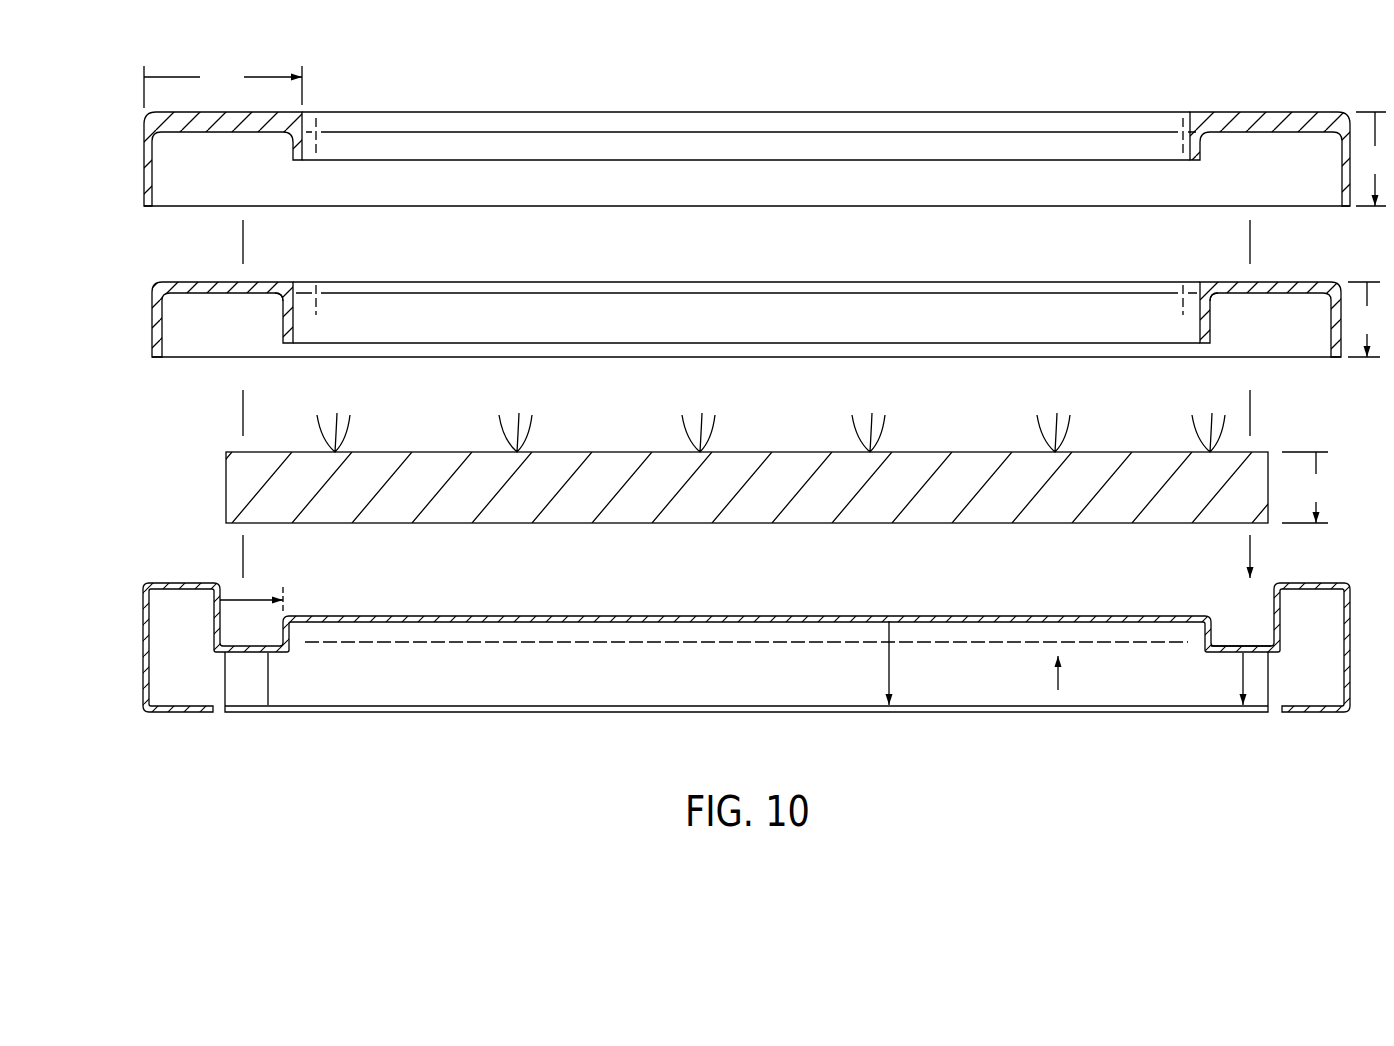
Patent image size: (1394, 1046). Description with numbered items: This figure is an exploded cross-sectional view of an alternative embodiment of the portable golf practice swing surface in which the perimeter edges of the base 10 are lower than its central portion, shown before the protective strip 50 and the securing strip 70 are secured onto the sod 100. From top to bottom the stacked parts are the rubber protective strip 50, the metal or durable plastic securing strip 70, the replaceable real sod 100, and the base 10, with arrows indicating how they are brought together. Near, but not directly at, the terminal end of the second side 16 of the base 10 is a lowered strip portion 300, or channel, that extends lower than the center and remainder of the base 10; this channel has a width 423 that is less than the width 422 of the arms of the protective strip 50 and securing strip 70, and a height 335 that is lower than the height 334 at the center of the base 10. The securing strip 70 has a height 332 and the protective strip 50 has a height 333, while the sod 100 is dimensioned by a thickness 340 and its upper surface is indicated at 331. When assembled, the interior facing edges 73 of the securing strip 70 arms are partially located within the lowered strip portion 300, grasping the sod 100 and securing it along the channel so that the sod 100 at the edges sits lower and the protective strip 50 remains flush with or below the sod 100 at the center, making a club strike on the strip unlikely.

The base 10 is at (693, 690).
The second side 16 is at (1352, 664).
The protective strip 50 is at (143, 156).
The securing strip 70 is at (152, 310).
The interior facing edges 73 is at (283, 328).
The sod 100 is at (1145, 468).
The lowered strip portion 300 is at (1250, 646).
The tray surface 331 is at (1058, 614).
The height of securing strip 332 is at (1367, 319).
The height of protective strip 333 is at (1375, 159).
The height at center of base 334 is at (889, 662).
The height of lowered strip portion 335 is at (268, 690).
The thickness of core layer 340 is at (1309, 487).
The width of arms 422 is at (223, 87).
The width of lowered strip portion 423 is at (248, 598).